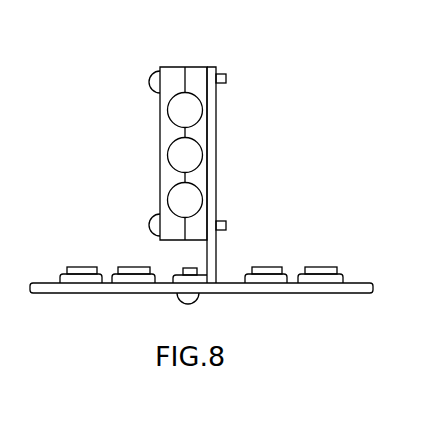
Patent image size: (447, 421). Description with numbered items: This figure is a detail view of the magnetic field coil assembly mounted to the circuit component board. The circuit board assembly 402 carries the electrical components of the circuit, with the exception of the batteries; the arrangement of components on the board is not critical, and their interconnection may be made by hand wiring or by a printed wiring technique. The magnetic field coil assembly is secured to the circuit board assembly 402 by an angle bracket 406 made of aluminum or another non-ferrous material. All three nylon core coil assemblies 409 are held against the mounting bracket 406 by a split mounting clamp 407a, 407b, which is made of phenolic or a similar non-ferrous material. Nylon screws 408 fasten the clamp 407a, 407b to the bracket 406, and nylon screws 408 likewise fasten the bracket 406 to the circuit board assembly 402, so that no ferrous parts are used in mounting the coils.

The circuit board assembly 402 is at (224, 284).
The angle bracket 406 is at (217, 168).
The split mounting clamp 407a is at (185, 132).
The split mounting clamp 407b is at (198, 135).
The nylon screws 408 is at (225, 78).
The nylon core coil assemblies 409 is at (163, 117).